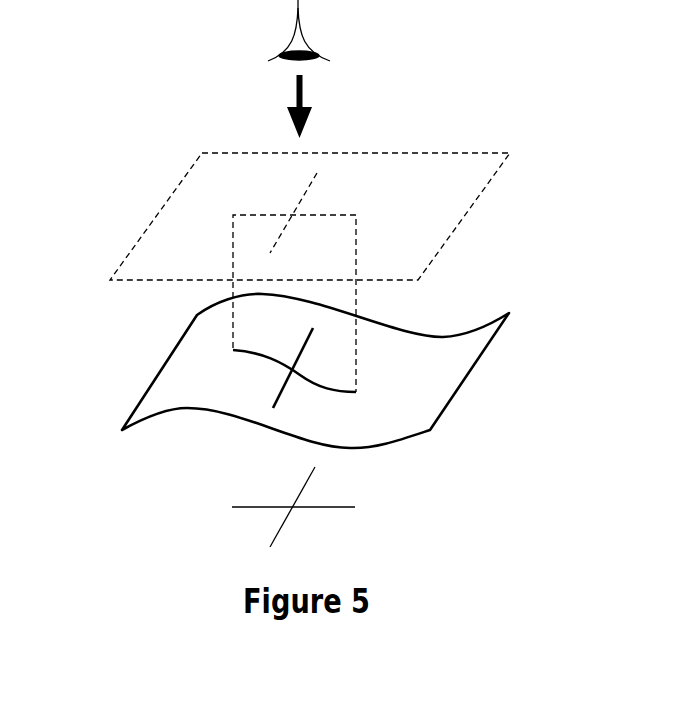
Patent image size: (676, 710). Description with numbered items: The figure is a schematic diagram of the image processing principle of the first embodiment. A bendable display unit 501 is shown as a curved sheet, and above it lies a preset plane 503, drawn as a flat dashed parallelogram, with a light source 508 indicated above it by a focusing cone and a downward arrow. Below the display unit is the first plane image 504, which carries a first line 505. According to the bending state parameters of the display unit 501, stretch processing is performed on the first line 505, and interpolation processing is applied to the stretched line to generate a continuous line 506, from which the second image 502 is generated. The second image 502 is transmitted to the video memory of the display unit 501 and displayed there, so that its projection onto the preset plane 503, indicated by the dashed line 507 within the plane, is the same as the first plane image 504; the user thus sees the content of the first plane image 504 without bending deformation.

The display unit 501 is at (448, 382).
The second image 502 is at (280, 390).
The preset plane 503 is at (427, 213).
The first plane image 504 is at (277, 535).
The first line 505 is at (323, 510).
The continuous line 506 is at (325, 392).
The line of pattern on reference plane 507 is at (282, 232).
The light source / projector 508 is at (307, 35).